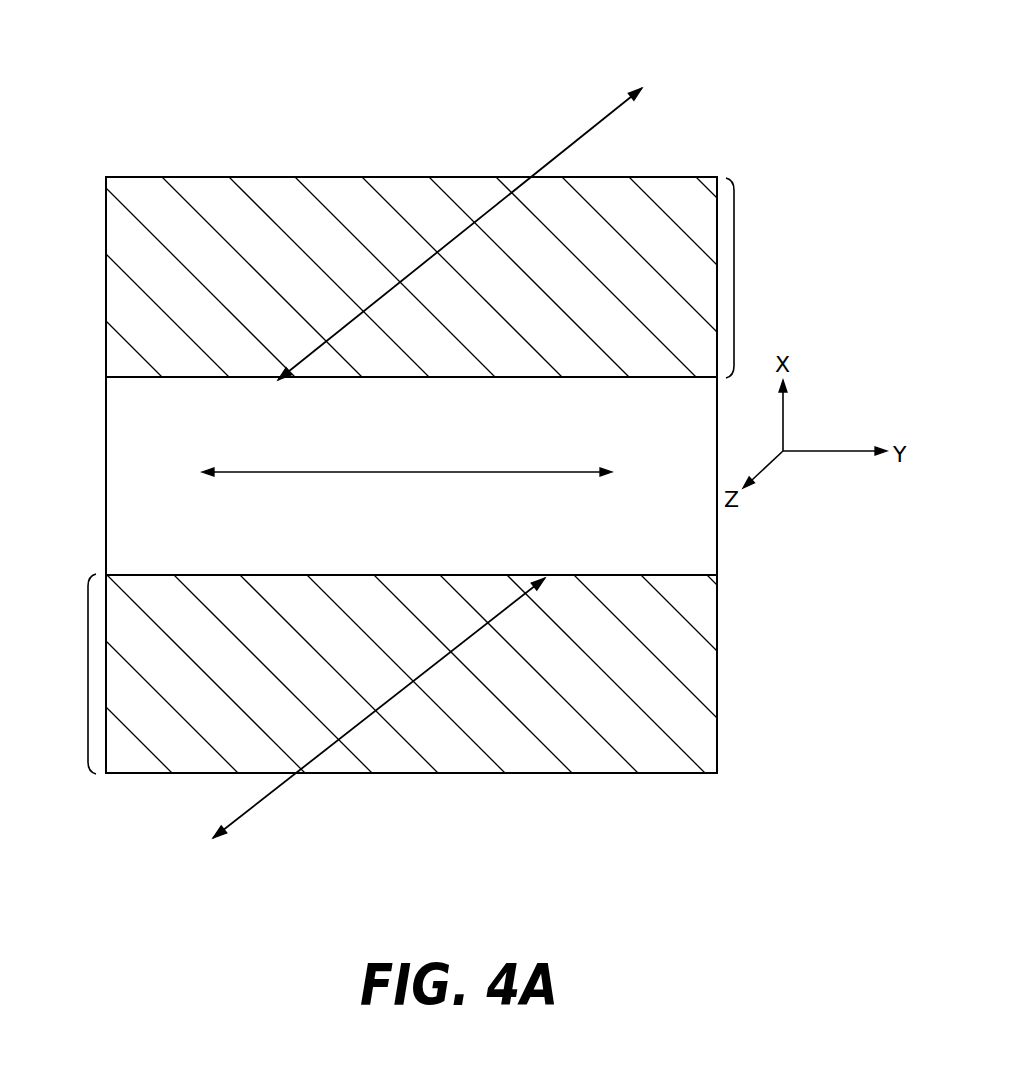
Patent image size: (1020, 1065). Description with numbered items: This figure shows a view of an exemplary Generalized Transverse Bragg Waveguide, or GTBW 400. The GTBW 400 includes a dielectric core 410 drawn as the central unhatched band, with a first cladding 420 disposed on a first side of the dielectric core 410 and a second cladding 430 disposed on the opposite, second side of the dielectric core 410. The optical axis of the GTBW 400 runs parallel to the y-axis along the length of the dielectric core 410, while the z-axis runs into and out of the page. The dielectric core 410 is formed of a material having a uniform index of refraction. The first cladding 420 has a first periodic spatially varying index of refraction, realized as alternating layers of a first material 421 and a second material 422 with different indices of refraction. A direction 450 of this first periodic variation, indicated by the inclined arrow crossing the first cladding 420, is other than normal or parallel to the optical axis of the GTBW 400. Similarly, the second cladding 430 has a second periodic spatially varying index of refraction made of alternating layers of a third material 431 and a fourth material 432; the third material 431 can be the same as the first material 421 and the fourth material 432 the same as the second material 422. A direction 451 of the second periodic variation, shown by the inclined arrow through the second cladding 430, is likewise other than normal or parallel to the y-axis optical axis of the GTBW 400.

The Generalized Transverse Bragg Waveguide (GTBW) 400 is at (456, 145).
The dielectric core 410 is at (708, 562).
The first cladding 420 is at (735, 283).
The first material 421 is at (115, 218).
The second material 422 is at (148, 186).
The second cladding 430 is at (88, 676).
The third material 431 is at (708, 741).
The fourth material 432 is at (670, 772).
The direction of the first periodic spatially varying index of refraction 450 is at (617, 97).
The direction of the second periodic spatially varying index of refraction 451 is at (258, 806).